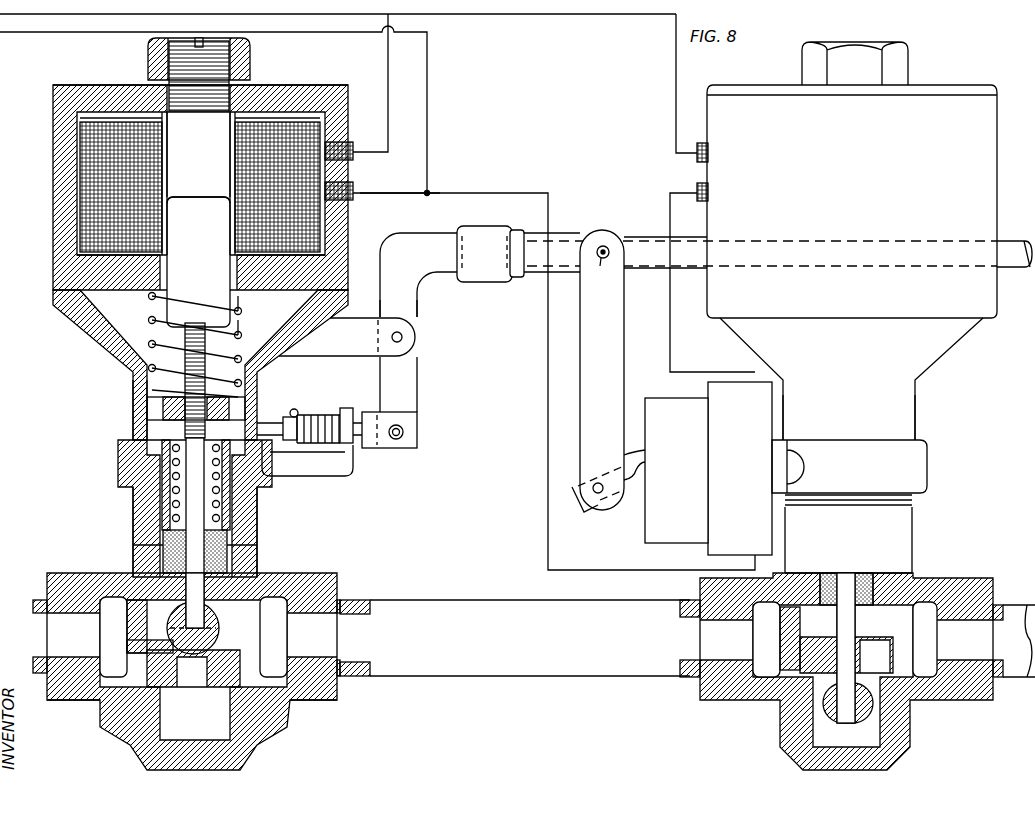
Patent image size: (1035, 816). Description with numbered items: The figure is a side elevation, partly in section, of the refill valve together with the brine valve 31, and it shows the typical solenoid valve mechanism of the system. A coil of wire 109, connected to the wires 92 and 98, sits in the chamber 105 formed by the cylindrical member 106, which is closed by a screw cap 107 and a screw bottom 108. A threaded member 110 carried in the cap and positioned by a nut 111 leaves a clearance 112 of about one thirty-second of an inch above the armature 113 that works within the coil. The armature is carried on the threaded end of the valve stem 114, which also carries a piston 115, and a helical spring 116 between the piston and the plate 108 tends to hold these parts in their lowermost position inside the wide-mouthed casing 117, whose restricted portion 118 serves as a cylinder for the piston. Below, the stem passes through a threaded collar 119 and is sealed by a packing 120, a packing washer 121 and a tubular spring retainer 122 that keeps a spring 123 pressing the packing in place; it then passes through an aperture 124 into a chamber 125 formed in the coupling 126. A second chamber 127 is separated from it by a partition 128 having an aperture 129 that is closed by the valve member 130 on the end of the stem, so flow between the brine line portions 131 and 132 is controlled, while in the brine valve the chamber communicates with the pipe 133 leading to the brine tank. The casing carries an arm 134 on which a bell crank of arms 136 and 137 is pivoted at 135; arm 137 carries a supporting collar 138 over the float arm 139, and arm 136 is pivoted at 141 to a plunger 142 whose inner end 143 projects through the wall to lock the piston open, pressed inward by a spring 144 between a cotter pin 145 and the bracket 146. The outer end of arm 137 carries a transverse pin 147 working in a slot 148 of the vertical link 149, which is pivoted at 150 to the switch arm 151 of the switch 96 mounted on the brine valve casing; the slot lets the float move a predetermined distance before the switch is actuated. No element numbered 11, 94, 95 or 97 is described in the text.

The valve stem housing 11 is at (912, 520).
The brine valve 31 is at (997, 190).
The wire 92 is at (388, 87).
The conductor 94 is at (676, 67).
The solenoid terminal 95 is at (676, 193).
The switch 96 is at (666, 400).
The conductor 97 is at (52, 28).
The wire 98 is at (400, 193).
The chamber 105 is at (78, 250).
The cylindrical member 106 is at (53, 157).
The screw cap 107 is at (68, 82).
The screw bottom 108 is at (118, 283).
The coil of wire 109 is at (85, 214).
The threaded member 110 is at (232, 63).
The nut 111 is at (148, 45).
The clearance 112 is at (213, 197).
The armature 113 is at (183, 208).
The valve stem 114 is at (160, 334).
The piston 115 is at (133, 412).
The helical spring 116 is at (242, 333).
The wide-mouthed casing 117 is at (95, 338).
The restricted portion 118 is at (133, 388).
The threaded collar 119 is at (242, 525).
The packing 120 is at (230, 547).
The packing washer 121 is at (250, 510).
The tubular spring retainer 122 is at (160, 470).
The spring 123 is at (165, 495).
The aperture 124 is at (235, 580).
The chamber 125 is at (290, 628).
The coupling 126 is at (318, 700).
The chamber 127 is at (120, 688).
The partition 128 is at (125, 628).
The aperture 129 is at (180, 672).
The valve member 130 is at (219, 622).
The portion of brine line 131 is at (42, 600).
The portion of brine line 132 is at (492, 600).
The pipe 133 is at (1010, 603).
The arm 134 is at (358, 325).
The pivot 135 is at (402, 336).
The arm 136 is at (417, 388).
The arm 137 is at (440, 275).
The supporting collar 138 is at (500, 224).
The float arm 139 is at (648, 242).
The pivot 141 is at (403, 432).
The plunger 142 is at (355, 447).
The inner end 143 is at (268, 415).
The spring 144 is at (326, 448).
The cotter pin 145 is at (297, 405).
The bracket 146 is at (350, 407).
The transverse pin 147 is at (602, 262).
The slot 148 is at (603, 246).
The vertical link 149 is at (620, 325).
The pivot 150 is at (597, 498).
The switch arm 151 is at (631, 480).